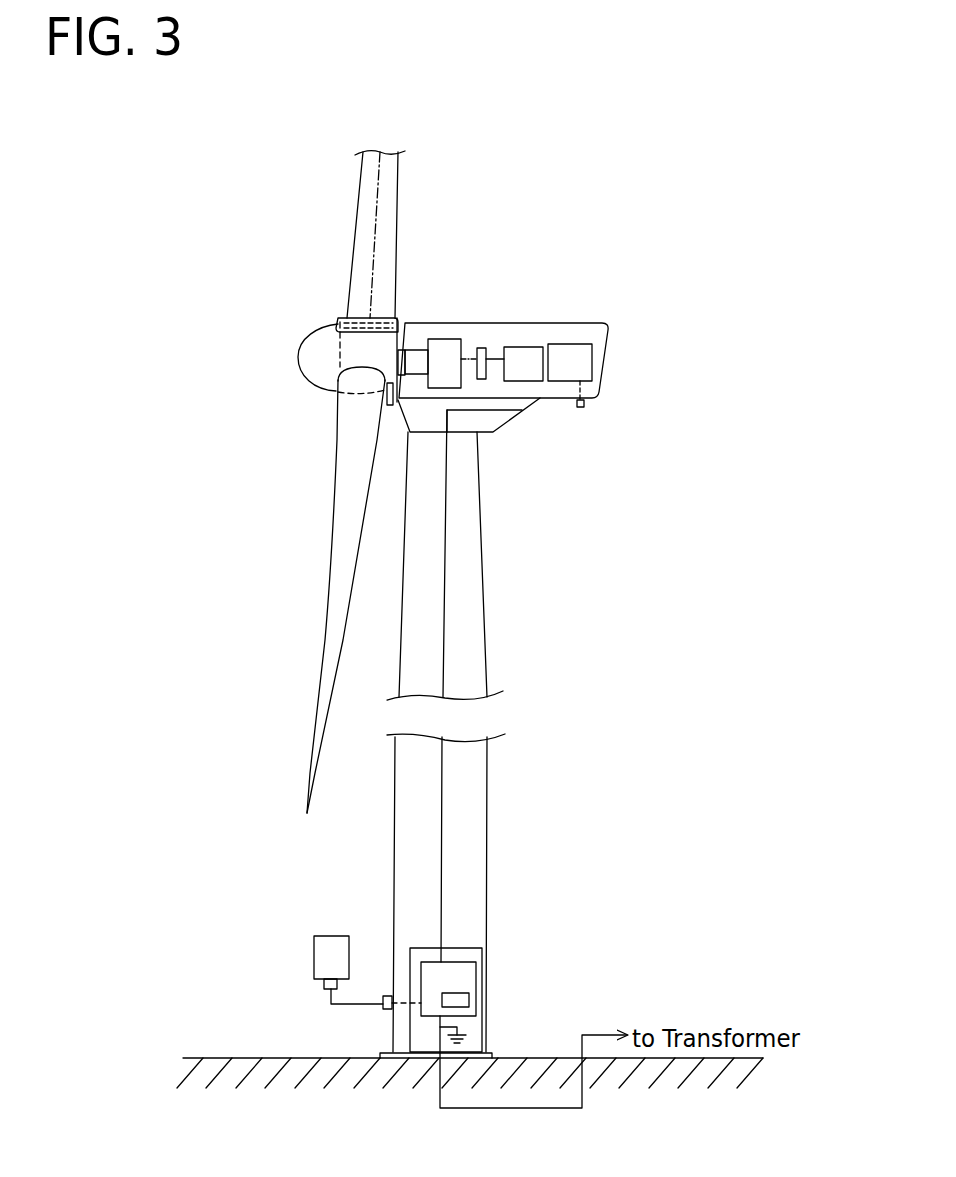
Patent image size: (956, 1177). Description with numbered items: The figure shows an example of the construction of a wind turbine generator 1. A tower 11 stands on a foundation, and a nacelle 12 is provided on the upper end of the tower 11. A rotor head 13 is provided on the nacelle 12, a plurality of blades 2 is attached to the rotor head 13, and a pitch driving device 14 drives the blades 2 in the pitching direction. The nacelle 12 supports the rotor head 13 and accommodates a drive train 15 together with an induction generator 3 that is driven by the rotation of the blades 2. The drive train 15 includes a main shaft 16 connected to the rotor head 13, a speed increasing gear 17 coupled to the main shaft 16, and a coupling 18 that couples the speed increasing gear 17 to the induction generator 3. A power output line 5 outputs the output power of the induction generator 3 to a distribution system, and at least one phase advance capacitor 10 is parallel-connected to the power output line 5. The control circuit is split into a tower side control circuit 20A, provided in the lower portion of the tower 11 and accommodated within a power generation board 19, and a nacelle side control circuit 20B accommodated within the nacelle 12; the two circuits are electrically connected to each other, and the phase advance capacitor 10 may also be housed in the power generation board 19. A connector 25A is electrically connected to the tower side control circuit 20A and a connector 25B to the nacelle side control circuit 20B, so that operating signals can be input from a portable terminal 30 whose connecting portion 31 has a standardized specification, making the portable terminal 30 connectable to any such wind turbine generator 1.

The wind turbine generator 1 is at (607, 517).
The blades 2 is at (353, 223).
The induction generator 3 is at (520, 381).
The power output line 5 is at (442, 780).
The phase advance capacitor 10 is at (462, 1034).
The tower 11 is at (485, 623).
The nacelle 12 is at (608, 358).
The rotor head 13 is at (278, 362).
The pitch driving device 14 is at (355, 348).
The drive train 15 is at (482, 390).
The main shaft 16 is at (413, 377).
The speed increasing gear 17 is at (440, 339).
The coupling 18 is at (480, 348).
The power generation board 19 is at (463, 948).
The tower side control circuit 20A is at (470, 978).
The nacelle side control circuit 20B is at (577, 353).
The connector 25A is at (380, 1008).
The connector 25B is at (580, 408).
The portable terminal 30 is at (329, 935).
The connecting portion 31 is at (322, 984).